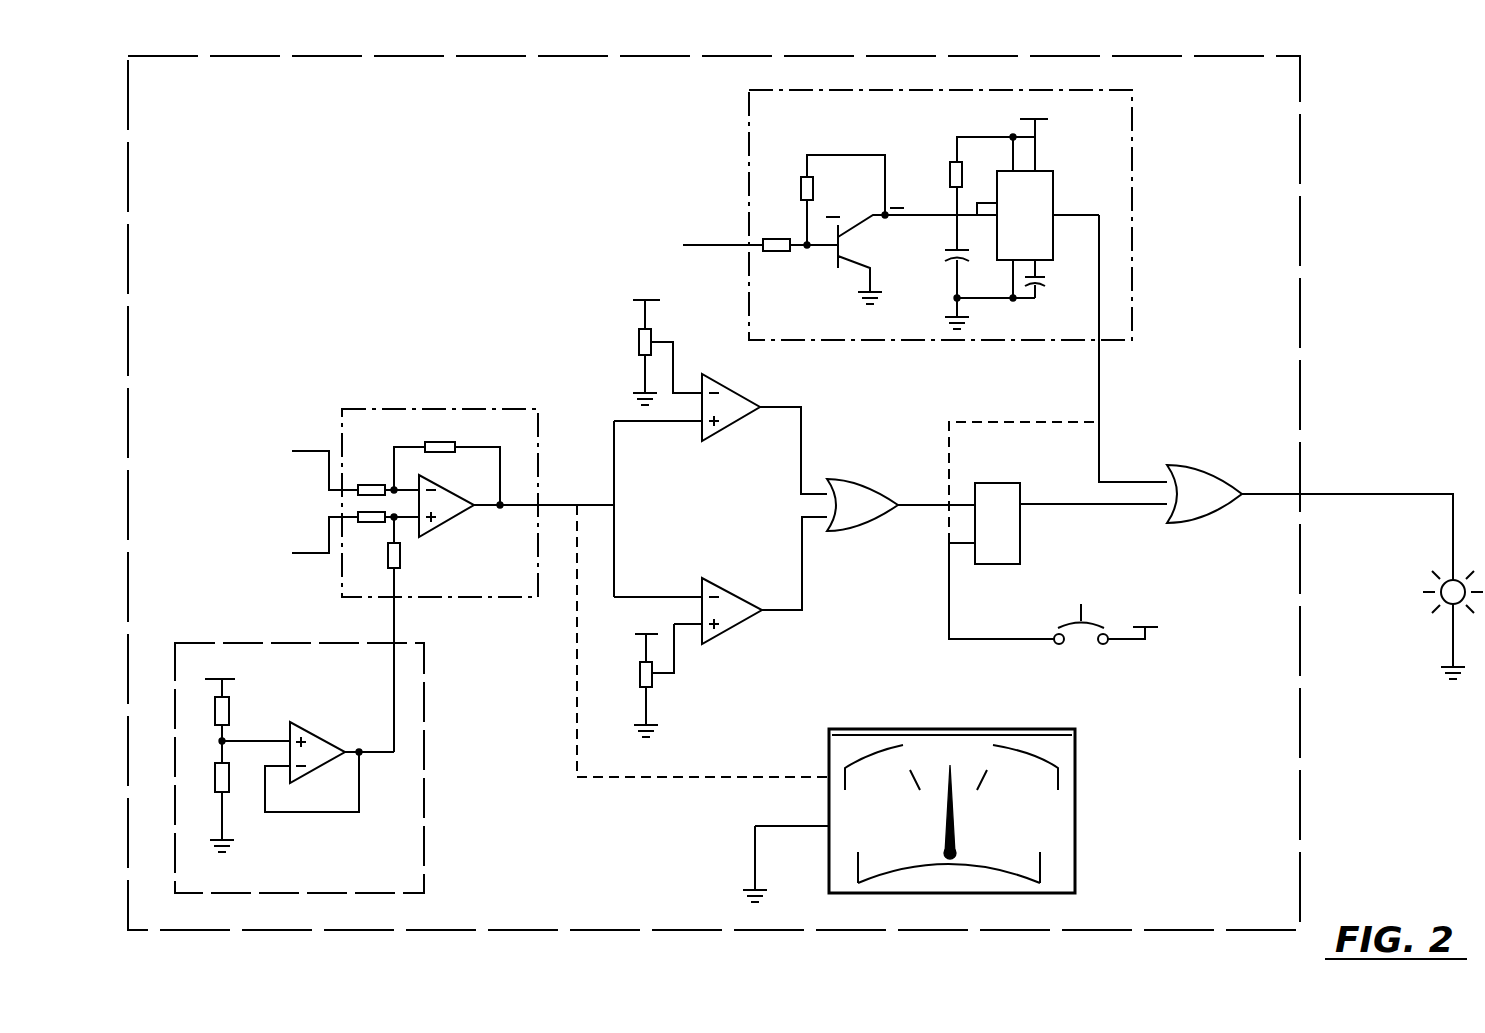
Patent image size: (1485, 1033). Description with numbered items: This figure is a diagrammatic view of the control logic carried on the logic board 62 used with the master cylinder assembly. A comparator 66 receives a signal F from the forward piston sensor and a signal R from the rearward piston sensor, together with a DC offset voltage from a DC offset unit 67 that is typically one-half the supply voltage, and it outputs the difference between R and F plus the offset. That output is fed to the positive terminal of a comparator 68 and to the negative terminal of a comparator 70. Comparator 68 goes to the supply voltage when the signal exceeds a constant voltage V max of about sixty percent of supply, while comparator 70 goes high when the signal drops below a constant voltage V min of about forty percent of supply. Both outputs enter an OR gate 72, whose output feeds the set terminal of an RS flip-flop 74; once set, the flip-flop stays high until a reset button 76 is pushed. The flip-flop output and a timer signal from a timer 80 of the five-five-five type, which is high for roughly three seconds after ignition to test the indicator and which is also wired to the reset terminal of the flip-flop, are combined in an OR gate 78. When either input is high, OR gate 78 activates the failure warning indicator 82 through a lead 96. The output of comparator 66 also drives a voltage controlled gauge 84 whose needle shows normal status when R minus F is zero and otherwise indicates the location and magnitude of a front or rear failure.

The logic board 62 is at (1298, 125).
The comparator 66 is at (455, 520).
The DC offset unit 67 is at (424, 857).
The comparator 68 is at (744, 399).
The comparator 70 is at (740, 600).
The OR gate 72 is at (884, 482).
The RS flip-flop 74 is at (1022, 518).
The reset button 76 is at (1080, 644).
The OR gate 78 is at (1222, 468).
The 555 timer 80 is at (1133, 256).
The failure warning indicator 82 is at (1441, 590).
The voltage controlled gauge 84 is at (975, 729).
The lead 96 is at (1398, 492).